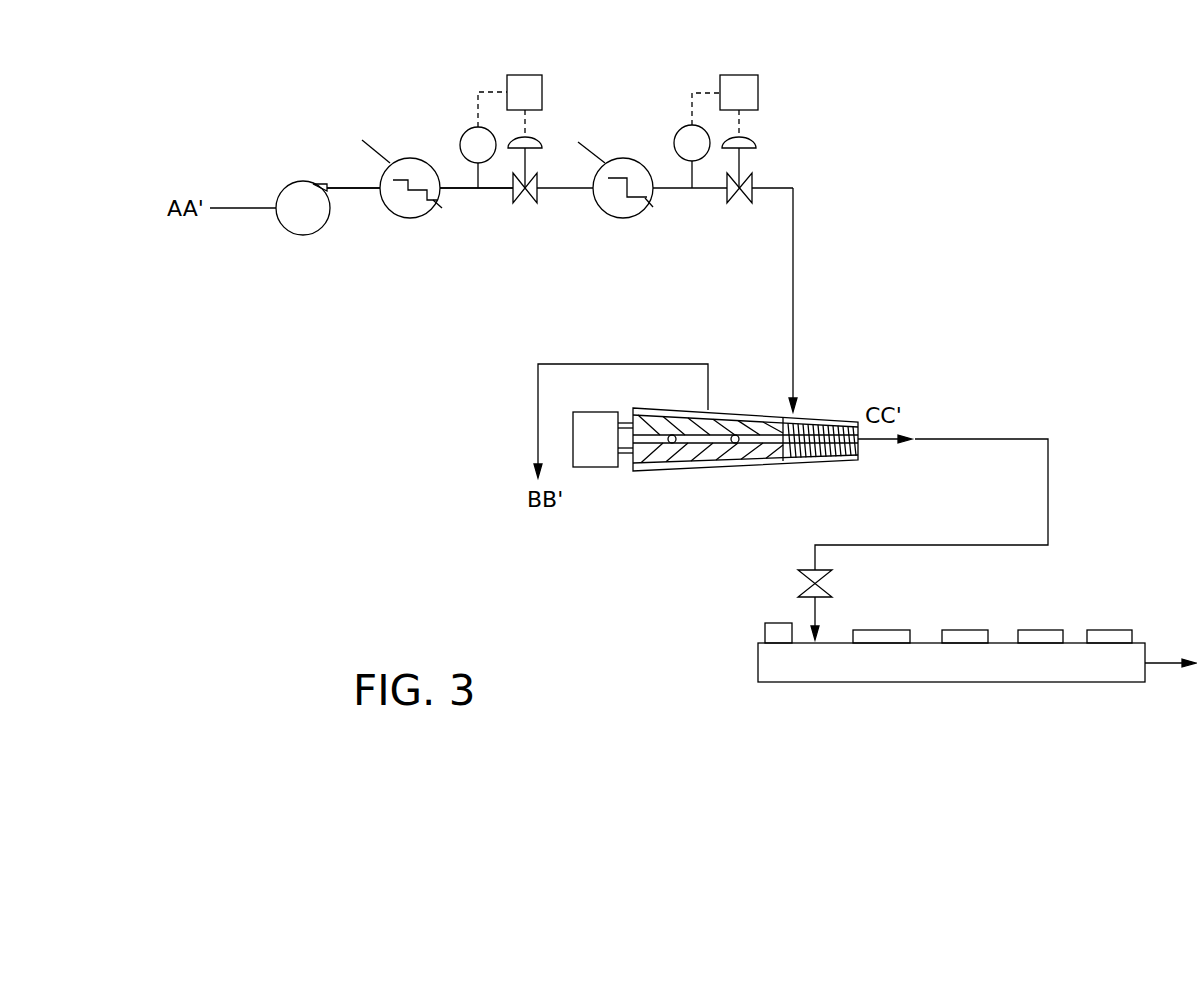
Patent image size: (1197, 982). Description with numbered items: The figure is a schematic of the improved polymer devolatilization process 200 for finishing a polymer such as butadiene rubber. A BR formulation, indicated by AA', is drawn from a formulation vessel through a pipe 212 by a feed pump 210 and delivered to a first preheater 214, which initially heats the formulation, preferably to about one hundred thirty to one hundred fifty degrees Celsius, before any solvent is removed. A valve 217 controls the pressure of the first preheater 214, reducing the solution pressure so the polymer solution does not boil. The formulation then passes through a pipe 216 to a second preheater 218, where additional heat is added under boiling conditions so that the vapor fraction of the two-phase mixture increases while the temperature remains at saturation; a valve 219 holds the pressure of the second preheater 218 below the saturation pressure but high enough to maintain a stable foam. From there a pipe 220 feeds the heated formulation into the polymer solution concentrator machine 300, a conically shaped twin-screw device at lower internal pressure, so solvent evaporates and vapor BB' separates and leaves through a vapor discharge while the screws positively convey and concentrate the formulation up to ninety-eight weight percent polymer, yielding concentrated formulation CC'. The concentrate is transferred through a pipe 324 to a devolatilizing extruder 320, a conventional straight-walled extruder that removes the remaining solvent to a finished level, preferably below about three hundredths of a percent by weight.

The improved polymer devolatilization process 200 is at (338, 70).
The feed pump 210 is at (303, 181).
The pipe 212 is at (363, 188).
The first preheater 214 is at (407, 158).
The pipe 216 is at (493, 188).
The valve 217 is at (537, 176).
The second preheater 218 is at (623, 157).
The valve 219 is at (752, 178).
The pipe 220 is at (793, 240).
The polymer solution concentrator machine 300 is at (850, 390).
The pipe 324 is at (930, 442).
The devolatilizing extruder 320 is at (880, 692).